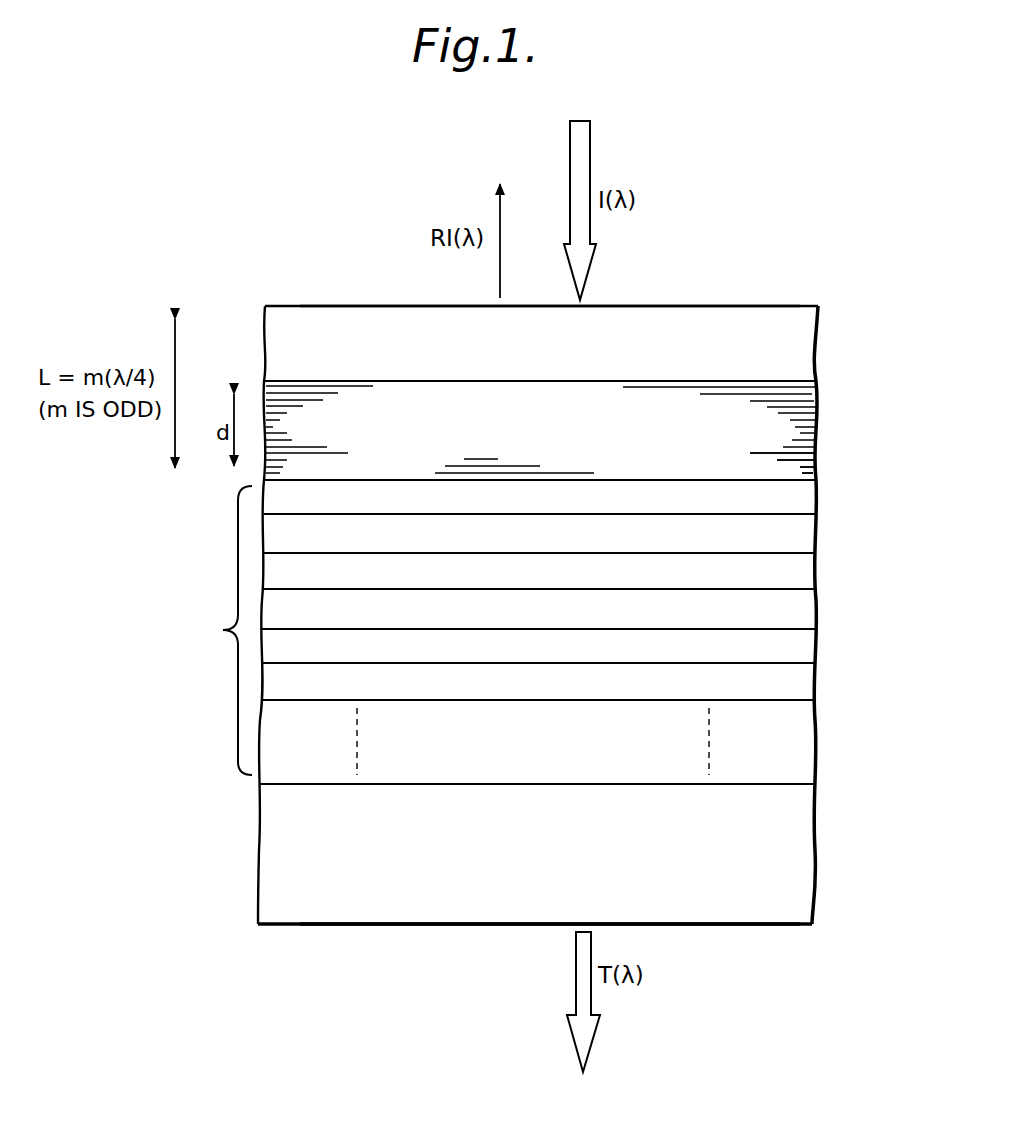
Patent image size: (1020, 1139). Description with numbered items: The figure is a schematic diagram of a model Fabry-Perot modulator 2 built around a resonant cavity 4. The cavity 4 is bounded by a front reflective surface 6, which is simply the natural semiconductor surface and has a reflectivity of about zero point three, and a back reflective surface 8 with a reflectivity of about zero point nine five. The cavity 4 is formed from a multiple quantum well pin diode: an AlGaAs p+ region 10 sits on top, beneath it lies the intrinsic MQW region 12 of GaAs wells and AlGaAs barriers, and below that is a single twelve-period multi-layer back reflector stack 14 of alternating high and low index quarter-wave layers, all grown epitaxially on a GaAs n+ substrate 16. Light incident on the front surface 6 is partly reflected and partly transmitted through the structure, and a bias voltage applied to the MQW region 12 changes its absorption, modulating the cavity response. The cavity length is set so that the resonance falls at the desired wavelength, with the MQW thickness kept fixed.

The Fabry-Perot modulator 2 is at (212, 920).
The resonant cavity 4 is at (828, 407).
The front reflective surface 6 is at (755, 306).
The back reflective surface 8 is at (740, 924).
The AlGaAs p+ region 10 is at (785, 341).
The intrinsic MQW region 12 is at (800, 460).
The multi-layer back reflector stack 14 is at (218, 632).
The GaAs n+ substrate 16 is at (290, 843).